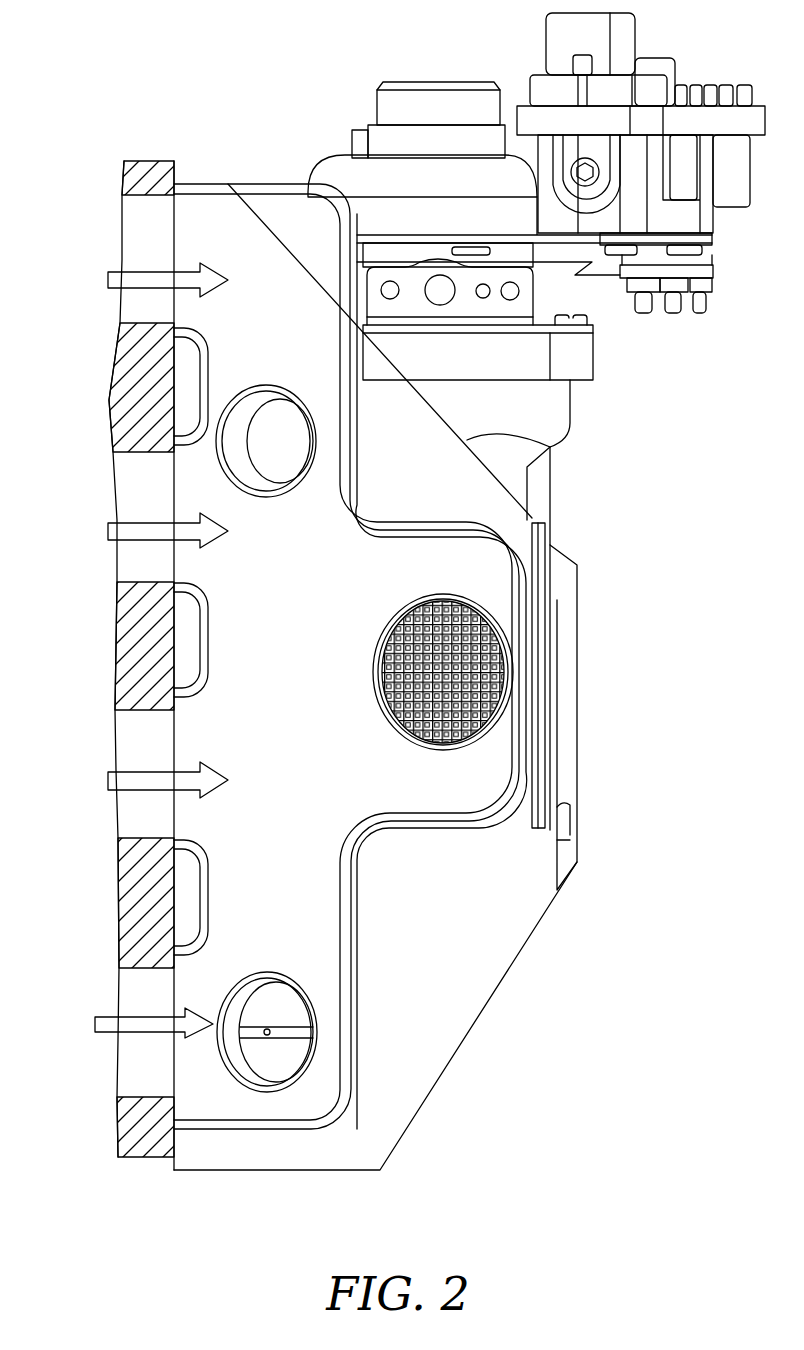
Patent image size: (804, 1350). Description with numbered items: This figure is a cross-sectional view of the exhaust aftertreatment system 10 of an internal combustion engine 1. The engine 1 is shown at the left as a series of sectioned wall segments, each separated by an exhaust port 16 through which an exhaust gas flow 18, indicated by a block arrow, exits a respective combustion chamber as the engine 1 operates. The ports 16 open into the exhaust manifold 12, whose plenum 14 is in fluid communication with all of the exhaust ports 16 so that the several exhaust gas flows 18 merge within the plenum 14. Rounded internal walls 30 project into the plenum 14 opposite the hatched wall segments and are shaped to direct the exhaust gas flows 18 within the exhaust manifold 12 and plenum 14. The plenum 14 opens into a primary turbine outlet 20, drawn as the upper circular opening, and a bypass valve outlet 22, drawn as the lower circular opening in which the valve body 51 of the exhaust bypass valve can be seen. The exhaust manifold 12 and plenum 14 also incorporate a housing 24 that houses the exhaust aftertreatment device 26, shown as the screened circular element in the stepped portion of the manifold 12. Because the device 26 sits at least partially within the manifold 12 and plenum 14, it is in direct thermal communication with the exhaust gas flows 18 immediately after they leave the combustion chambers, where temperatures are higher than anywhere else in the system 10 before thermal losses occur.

The internal combustion engine 1 is at (123, 650).
The exhaust aftertreatment system 10 is at (505, 533).
The exhaust manifold 12 is at (224, 180).
The plenum 14 is at (436, 1005).
The exhaust port 16 is at (140, 215).
The exhaust gas flow 18 is at (132, 277).
The primary turbine outlet 20 is at (313, 442).
The bypass valve outlet 22 is at (268, 1092).
The housing 24 is at (441, 752).
The exhaust aftertreatment device 26 is at (470, 680).
The internal wall 30 is at (200, 443).
The valve body 51 is at (300, 1033).